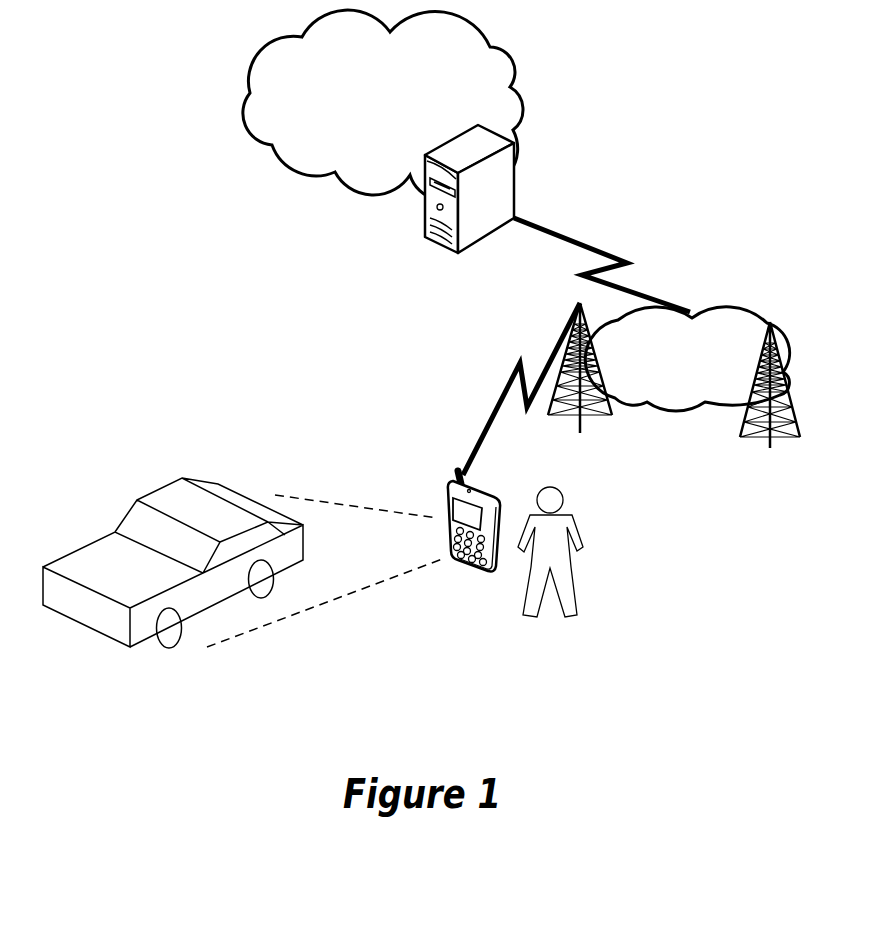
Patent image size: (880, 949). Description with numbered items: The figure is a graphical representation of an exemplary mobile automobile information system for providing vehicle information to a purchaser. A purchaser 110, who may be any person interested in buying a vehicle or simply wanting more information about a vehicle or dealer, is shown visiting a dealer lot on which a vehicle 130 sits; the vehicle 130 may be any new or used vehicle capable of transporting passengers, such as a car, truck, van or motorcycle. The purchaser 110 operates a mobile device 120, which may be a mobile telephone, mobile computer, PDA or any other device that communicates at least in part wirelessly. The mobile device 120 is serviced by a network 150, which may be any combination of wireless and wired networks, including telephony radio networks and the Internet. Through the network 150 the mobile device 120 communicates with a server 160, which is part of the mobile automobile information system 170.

The purchaser 110 is at (570, 575).
The mobile device 120 is at (478, 573).
The vehicle 130 is at (107, 637).
The network 150 is at (674, 375).
The server 160 is at (435, 243).
The mobile automobile information system 170 is at (383, 105).